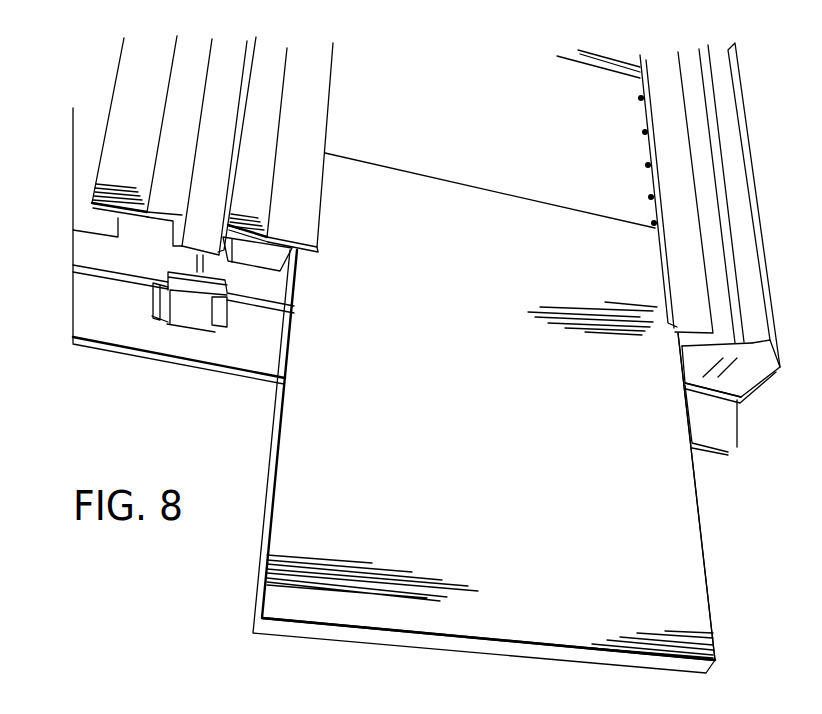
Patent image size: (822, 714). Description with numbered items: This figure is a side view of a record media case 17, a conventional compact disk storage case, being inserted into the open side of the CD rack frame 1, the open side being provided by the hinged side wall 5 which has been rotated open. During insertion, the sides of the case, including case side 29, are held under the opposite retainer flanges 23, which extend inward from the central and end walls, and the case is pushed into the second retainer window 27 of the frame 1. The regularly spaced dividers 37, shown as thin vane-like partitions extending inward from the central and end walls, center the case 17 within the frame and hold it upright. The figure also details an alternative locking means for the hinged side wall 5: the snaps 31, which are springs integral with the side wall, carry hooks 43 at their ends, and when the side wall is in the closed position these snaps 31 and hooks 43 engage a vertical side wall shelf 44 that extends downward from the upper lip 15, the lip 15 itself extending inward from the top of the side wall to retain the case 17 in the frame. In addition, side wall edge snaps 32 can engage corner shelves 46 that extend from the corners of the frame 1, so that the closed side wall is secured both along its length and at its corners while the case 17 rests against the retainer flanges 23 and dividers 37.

The CD rack frame 1 is at (766, 186).
The hinged side wall 5 is at (190, 342).
The upper lip 15 is at (90, 238).
The record media case 17 is at (677, 560).
The retainer flanges 23 is at (307, 213).
The second retainer window 27 is at (498, 115).
The case side 29 is at (688, 435).
The snaps 31 is at (153, 314).
The side wall edge snaps 32 is at (722, 428).
The dividers 37 is at (272, 256).
The hooks 43 is at (213, 330).
The vertical side wall shelf 44 is at (222, 278).
The corner shelves 46 is at (767, 380).